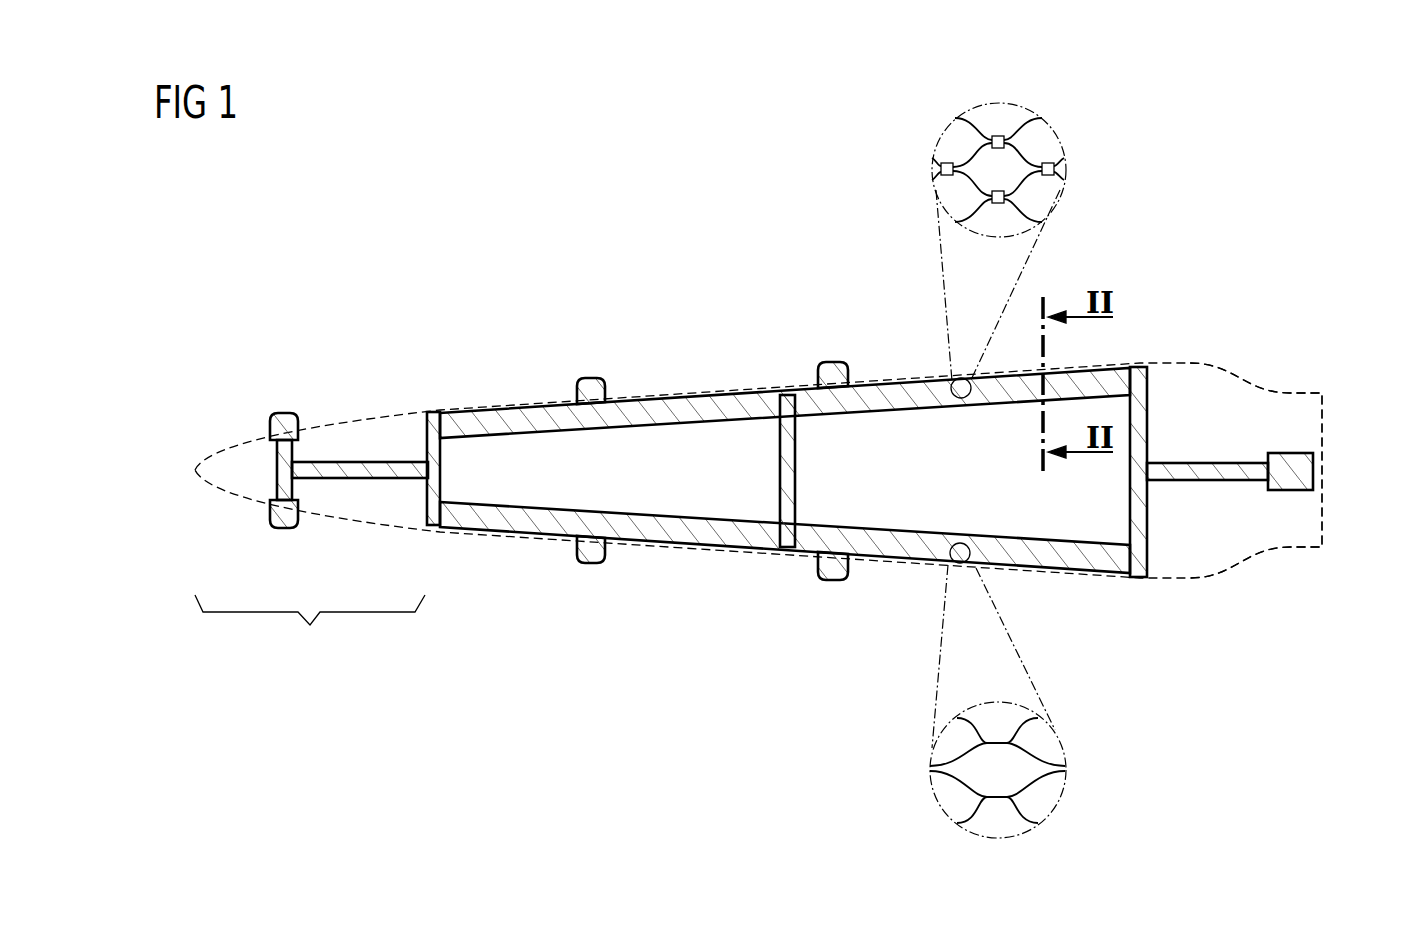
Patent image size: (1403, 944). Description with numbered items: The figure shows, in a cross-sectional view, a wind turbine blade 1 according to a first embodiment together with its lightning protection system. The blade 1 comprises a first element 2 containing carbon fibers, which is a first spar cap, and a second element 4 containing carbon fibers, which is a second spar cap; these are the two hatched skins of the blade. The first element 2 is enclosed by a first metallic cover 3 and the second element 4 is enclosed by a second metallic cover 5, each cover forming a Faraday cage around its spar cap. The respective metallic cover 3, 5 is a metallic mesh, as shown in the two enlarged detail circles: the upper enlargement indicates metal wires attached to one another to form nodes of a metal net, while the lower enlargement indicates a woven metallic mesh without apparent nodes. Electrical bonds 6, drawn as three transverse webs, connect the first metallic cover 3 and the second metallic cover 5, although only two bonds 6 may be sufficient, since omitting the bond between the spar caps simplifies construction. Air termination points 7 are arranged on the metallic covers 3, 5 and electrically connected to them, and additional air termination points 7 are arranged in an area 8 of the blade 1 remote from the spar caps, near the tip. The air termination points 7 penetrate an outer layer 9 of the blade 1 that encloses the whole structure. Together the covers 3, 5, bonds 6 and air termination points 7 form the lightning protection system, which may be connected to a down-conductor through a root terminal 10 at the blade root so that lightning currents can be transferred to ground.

The wind turbine blade 1 is at (176, 407).
The first element 2 is at (708, 402).
The first metallic cover 3 is at (1020, 192).
The second element 4 is at (708, 542).
The second metallic cover 5 is at (1020, 788).
The electrical bond 6 is at (432, 418).
The air termination point 7 is at (290, 420).
The area 8 is at (311, 553).
The outer layer 9 is at (1237, 572).
The root terminal 10 is at (1313, 470).